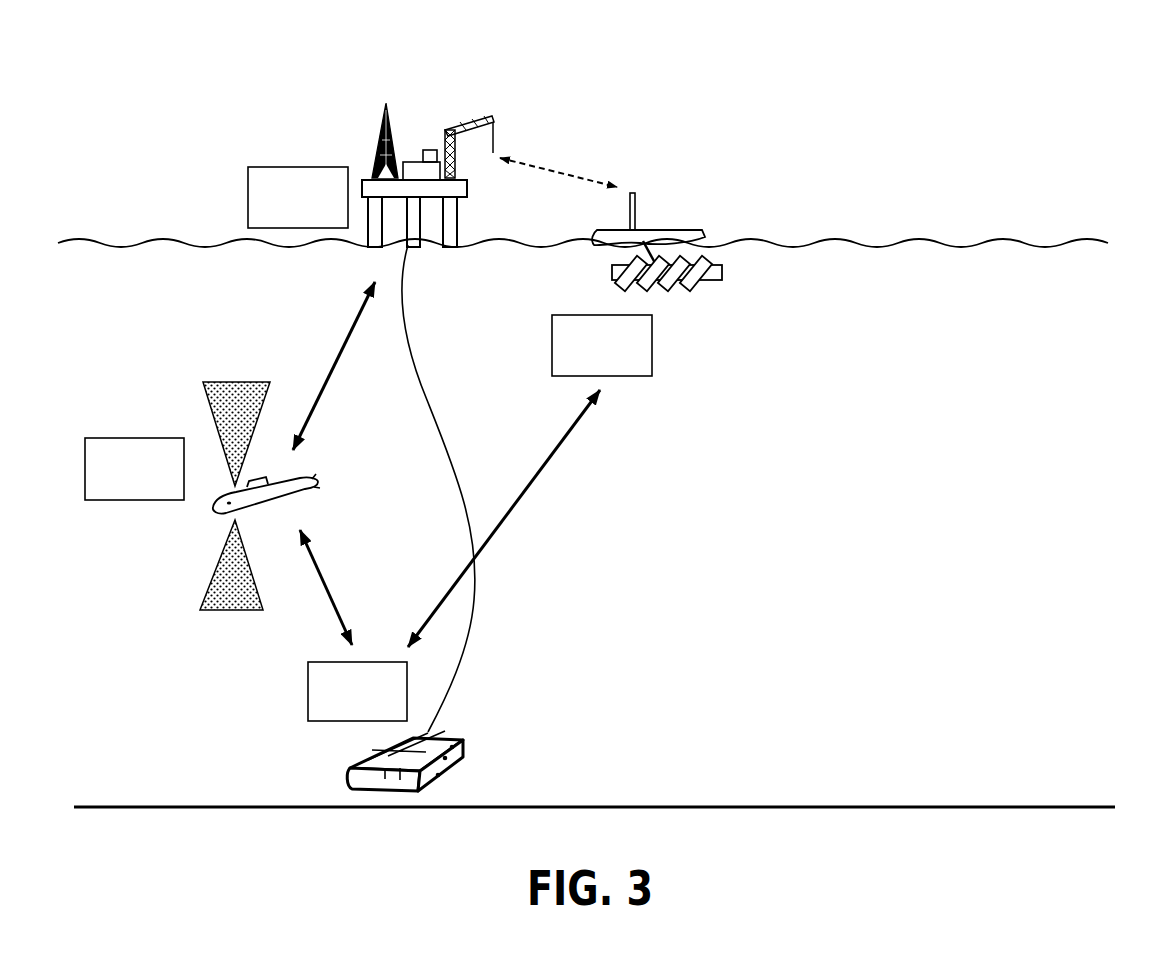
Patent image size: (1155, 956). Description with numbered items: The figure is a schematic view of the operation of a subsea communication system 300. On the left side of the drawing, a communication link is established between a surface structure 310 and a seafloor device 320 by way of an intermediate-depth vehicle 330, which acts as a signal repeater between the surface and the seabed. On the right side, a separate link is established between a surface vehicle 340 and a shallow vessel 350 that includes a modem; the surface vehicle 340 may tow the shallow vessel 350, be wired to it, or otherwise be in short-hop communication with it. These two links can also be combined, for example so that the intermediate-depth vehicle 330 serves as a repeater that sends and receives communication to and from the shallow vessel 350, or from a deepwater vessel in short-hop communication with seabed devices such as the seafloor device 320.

The subsea communication system 300 is at (406, 81).
The surface structure 310 is at (372, 138).
The seafloor device 320 is at (465, 758).
The intermediate-depth vehicle 330 is at (217, 507).
The surface vehicle 340 is at (680, 228).
The shallow vessel 350 is at (710, 283).